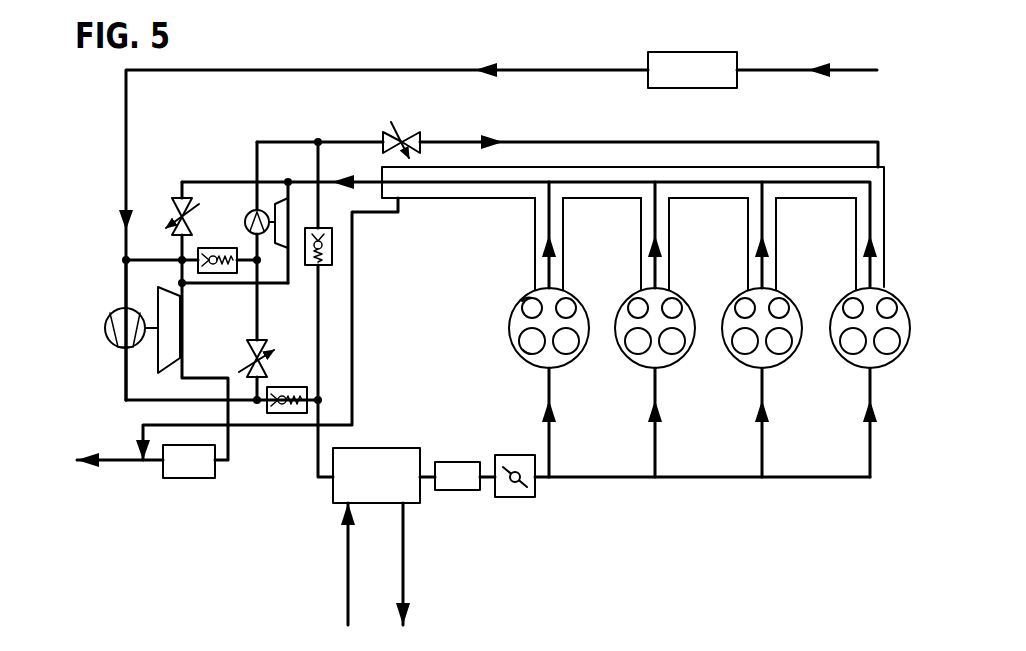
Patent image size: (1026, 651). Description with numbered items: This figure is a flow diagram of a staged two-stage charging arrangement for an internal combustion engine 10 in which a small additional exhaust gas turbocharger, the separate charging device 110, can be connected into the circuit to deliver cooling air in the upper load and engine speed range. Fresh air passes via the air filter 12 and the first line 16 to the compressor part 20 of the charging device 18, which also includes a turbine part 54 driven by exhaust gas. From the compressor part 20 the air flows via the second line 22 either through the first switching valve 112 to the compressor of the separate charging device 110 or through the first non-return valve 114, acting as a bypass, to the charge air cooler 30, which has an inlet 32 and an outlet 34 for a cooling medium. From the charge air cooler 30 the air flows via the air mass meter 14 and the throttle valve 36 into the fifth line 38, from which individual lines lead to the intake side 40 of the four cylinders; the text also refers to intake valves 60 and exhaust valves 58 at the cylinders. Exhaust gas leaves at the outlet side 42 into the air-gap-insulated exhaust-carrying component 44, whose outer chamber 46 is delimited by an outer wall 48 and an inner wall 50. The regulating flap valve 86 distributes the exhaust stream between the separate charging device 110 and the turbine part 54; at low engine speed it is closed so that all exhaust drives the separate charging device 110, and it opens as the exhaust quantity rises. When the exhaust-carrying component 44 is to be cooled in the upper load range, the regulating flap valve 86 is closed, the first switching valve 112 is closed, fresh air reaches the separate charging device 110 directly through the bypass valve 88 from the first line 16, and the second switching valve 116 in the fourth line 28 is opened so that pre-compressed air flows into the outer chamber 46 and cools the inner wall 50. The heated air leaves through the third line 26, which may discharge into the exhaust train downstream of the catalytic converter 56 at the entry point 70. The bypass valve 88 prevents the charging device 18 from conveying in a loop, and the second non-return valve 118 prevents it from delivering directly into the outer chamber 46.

The internal combustion engine 10 is at (887, 376).
The air filter 12 is at (740, 58).
The air mass meter 14 is at (458, 492).
The first line 16 is at (183, 72).
The charging device 18 is at (150, 347).
The compressor part 20 is at (118, 320).
The second line 22 is at (130, 403).
The third line 26 is at (354, 312).
The fourth line 28 is at (452, 140).
The charge air cooler 30 is at (378, 505).
The inlet 32 is at (347, 572).
The outlet 34 is at (405, 575).
The throttle valve 36 is at (515, 499).
The fifth line 38 is at (712, 480).
The intake side 40 is at (723, 425).
The outlet side 42 is at (595, 117).
The exhaust-carrying component 44 is at (817, 168).
The outer chamber 46 is at (757, 178).
The outer wall 48 is at (521, 165).
The inner wall 50 is at (616, 180).
The turbine part 54 is at (157, 302).
The catalytic converter 56 is at (190, 480).
The exhaust valve 58 is at (527, 353).
The intake valve 60 is at (527, 299).
The entry point 70 is at (143, 470).
The regulating flap valve 86 is at (170, 210).
The bypass valve 88 is at (222, 247).
The separate charging device 110 is at (264, 200).
The first switching valve 112 is at (280, 362).
The first non-return valve 114 is at (292, 414).
The second switching valve 116 is at (394, 132).
The second non-return valve 118 is at (334, 256).